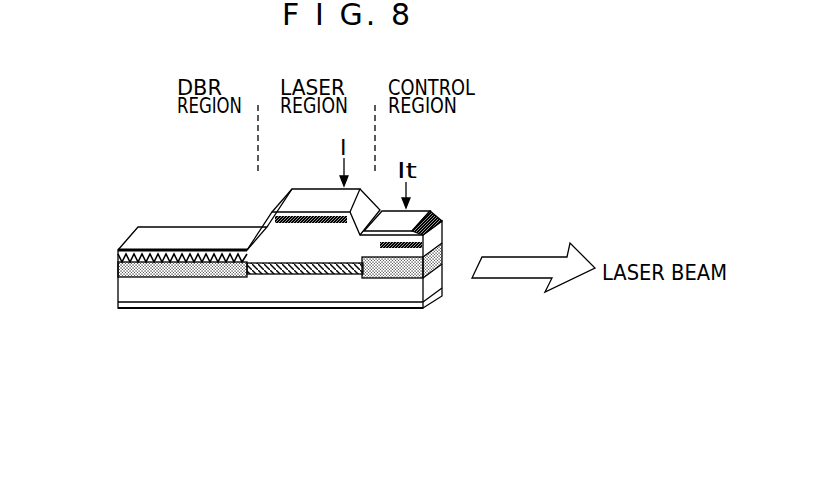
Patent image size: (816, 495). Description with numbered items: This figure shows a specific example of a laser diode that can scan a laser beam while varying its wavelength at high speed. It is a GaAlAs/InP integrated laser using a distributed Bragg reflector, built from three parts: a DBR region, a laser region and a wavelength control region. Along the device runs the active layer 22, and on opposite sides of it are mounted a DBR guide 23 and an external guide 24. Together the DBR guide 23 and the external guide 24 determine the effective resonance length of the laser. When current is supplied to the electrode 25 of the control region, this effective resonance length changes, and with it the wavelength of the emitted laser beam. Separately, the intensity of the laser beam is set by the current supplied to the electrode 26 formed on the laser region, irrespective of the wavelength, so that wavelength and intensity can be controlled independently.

The active layer 22 is at (293, 275).
The DBR guide 23 is at (127, 273).
The external guide 24 is at (397, 268).
The electrode 25 is at (416, 213).
The electrode 26 is at (304, 194).